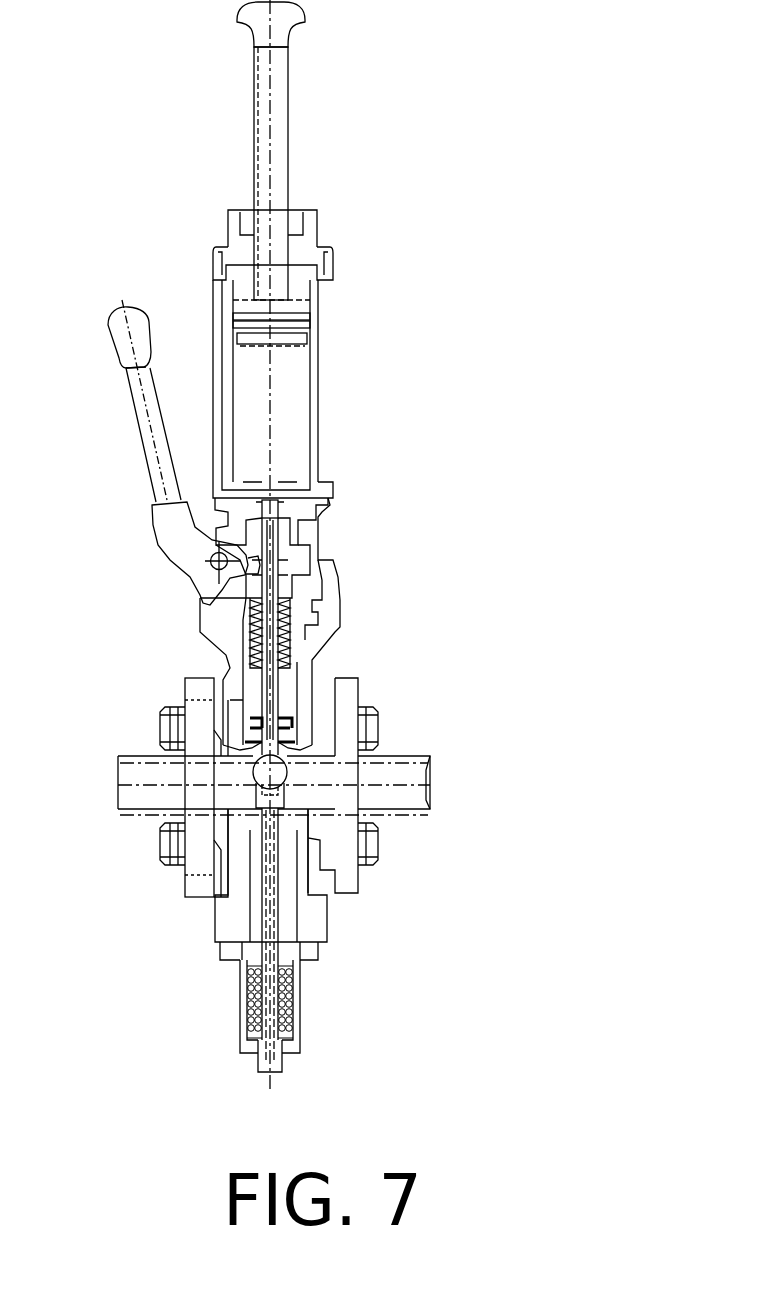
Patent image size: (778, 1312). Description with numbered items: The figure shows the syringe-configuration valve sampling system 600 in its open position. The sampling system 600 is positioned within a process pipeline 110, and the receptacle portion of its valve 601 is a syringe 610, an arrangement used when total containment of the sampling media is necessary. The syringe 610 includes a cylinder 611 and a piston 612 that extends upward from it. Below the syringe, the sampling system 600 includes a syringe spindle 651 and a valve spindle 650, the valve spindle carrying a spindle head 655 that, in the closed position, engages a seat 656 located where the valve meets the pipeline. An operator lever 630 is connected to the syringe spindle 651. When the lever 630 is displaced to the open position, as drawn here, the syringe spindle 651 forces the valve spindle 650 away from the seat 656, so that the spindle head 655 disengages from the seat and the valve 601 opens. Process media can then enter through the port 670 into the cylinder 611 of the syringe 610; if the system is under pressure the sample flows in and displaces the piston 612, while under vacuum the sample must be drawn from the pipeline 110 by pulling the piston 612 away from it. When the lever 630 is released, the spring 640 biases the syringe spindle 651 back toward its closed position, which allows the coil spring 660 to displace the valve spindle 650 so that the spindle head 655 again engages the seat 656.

The valve sampling system 600 is at (367, 160).
The syringe 610 is at (205, 262).
The cylinder 611 is at (320, 360).
The piston 612 is at (289, 105).
The operator lever 630 is at (140, 433).
The spring 640 is at (293, 610).
The syringe spindle 651 is at (282, 680).
The seat 656 is at (290, 740).
The spindle head 655 is at (345, 770).
The port 670 is at (215, 752).
The process pipeline 110 is at (430, 810).
The valve spindle 650 is at (277, 925).
The valve 601 is at (187, 932).
The coil spring 660 is at (300, 1000).